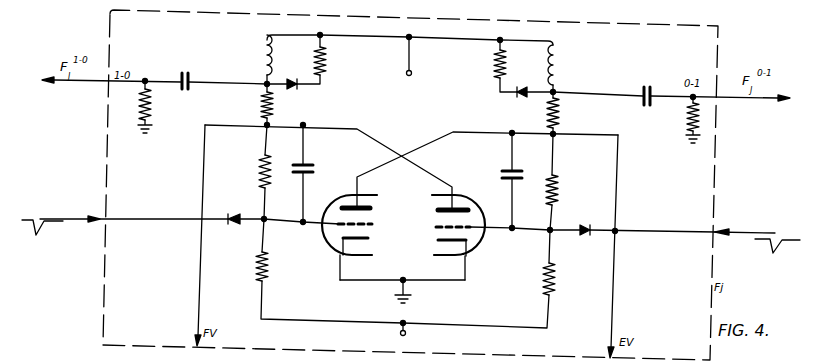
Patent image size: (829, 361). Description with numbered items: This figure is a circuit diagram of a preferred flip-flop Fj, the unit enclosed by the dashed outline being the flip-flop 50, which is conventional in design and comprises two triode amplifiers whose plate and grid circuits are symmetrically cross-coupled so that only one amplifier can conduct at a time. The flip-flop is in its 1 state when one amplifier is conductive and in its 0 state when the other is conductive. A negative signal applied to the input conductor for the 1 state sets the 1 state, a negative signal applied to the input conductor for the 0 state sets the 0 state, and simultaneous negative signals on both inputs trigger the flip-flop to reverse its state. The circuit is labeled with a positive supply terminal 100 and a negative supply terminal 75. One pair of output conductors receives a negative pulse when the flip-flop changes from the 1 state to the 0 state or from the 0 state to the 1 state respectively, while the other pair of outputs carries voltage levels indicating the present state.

The bistable flip-flop trigger circuit 50 is at (744, 3).
The 0 state 0 is at (72, 218).
The 1 state 1 is at (748, 235).
The +100 volt supply terminal 100 is at (434, 60).
The -75 volt supply terminal 75 is at (420, 331).